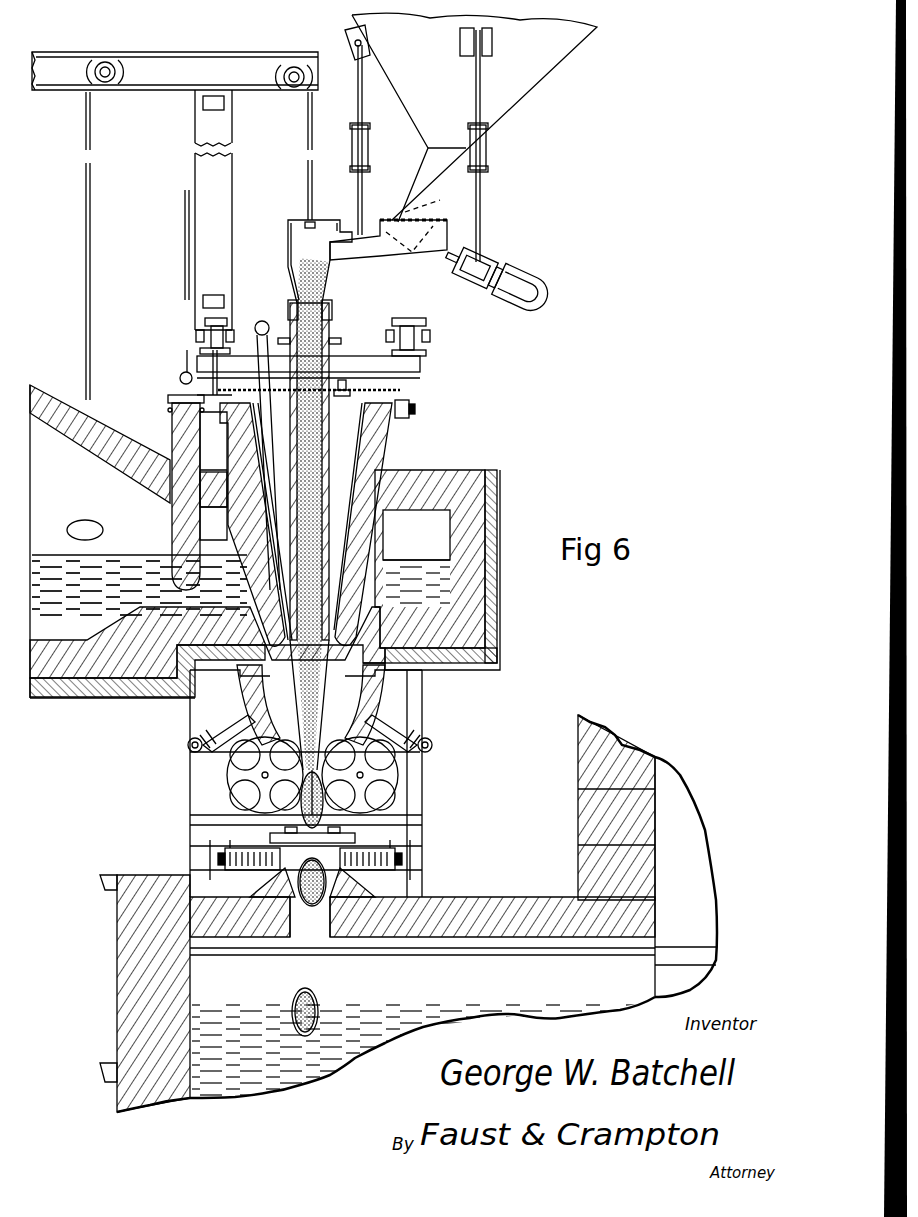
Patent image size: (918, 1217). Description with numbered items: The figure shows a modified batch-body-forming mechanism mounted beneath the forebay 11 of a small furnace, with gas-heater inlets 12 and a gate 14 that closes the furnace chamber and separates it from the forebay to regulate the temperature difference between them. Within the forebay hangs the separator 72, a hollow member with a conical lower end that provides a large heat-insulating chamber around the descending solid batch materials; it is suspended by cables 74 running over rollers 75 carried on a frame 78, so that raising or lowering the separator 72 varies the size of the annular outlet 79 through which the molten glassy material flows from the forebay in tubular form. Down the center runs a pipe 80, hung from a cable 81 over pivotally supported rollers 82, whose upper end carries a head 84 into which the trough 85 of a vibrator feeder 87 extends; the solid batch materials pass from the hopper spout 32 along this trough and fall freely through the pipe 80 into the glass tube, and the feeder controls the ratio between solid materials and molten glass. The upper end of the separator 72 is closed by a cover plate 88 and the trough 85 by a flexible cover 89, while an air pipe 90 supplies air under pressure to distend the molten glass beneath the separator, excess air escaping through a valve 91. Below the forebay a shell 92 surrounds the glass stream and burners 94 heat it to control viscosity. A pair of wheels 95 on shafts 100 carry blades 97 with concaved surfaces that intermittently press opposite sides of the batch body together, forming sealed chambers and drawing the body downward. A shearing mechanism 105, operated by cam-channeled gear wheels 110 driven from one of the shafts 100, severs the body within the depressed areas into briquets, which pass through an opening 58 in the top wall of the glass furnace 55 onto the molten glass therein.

The forebay 11 is at (455, 478).
The inlets 12 is at (84, 520).
The gate 14 is at (174, 524).
The spout 32 is at (432, 176).
The glass furnace 55 is at (600, 845).
The opening 58 is at (312, 910).
The separator 72 is at (373, 458).
The cables 74 is at (197, 364).
The rollers 75 is at (200, 325).
The frame 78 is at (416, 412).
The annular outlet 79 is at (424, 672).
The pipe 80 is at (330, 325).
The cable 81 is at (90, 240).
The rollers 82 is at (110, 84).
The head 84 is at (300, 256).
The trough 85 is at (388, 252).
The vibrator feeder 87 is at (508, 282).
The cover plate 88 is at (365, 393).
The flexible cover 89 is at (430, 220).
The pipe 90 is at (274, 340).
The valve 91 is at (343, 380).
The shell 92 is at (380, 700).
The burners 94 is at (215, 722).
The wheels 95 is at (248, 796).
The blades 97 is at (390, 790).
The shafts 100 is at (250, 775).
The shearing mechanism 105 is at (355, 838).
The gear wheels 110 is at (215, 858).